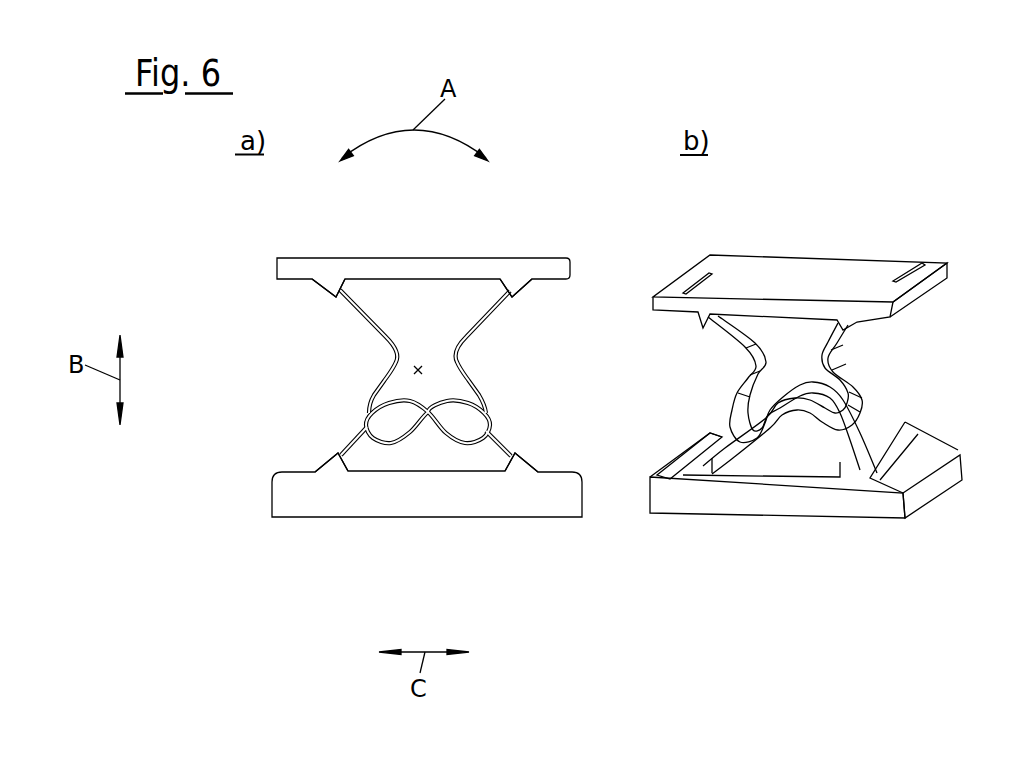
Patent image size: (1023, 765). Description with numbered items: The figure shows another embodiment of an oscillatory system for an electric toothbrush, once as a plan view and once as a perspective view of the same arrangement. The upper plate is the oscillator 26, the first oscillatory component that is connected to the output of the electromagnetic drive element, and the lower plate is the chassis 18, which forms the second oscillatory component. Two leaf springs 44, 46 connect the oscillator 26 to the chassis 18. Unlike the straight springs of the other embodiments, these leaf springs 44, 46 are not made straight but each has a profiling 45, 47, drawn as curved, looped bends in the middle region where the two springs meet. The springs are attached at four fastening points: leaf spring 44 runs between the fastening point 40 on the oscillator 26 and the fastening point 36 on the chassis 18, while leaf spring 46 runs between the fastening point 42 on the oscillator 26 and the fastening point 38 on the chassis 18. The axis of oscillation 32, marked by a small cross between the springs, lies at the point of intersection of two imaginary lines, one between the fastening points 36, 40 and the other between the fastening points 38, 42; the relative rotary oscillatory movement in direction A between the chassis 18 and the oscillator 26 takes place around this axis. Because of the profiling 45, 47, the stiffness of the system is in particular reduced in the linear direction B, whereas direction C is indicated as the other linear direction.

In FIG. 6a, the chassis 18 is at (497, 512).
In FIG. 6b, the chassis 18 is at (803, 505).
In FIG. 6a, the oscillator 26 is at (452, 265).
In FIG. 6b, the oscillator 26 is at (833, 272).
In FIG. 6a, the axis of oscillation 32 is at (424, 372).
In FIG. 6a, the fastening point 36 is at (516, 452).
In FIG. 6a, the fastening point 38 is at (336, 453).
In FIG. 6a, the fastening point 40 is at (338, 296).
In FIG. 6a, the fastening point 42 is at (513, 299).
In FIG. 6a, the leaf spring 44 is at (370, 328).
In FIG. 6b, the leaf spring 44 is at (760, 367).
In FIG. 6a, the profiling 45 is at (362, 408).
In FIG. 6a, the leaf spring 46 is at (466, 337).
In FIG. 6b, the leaf spring 46 is at (873, 384).
In FIG. 6a, the profiling 47 is at (491, 410).